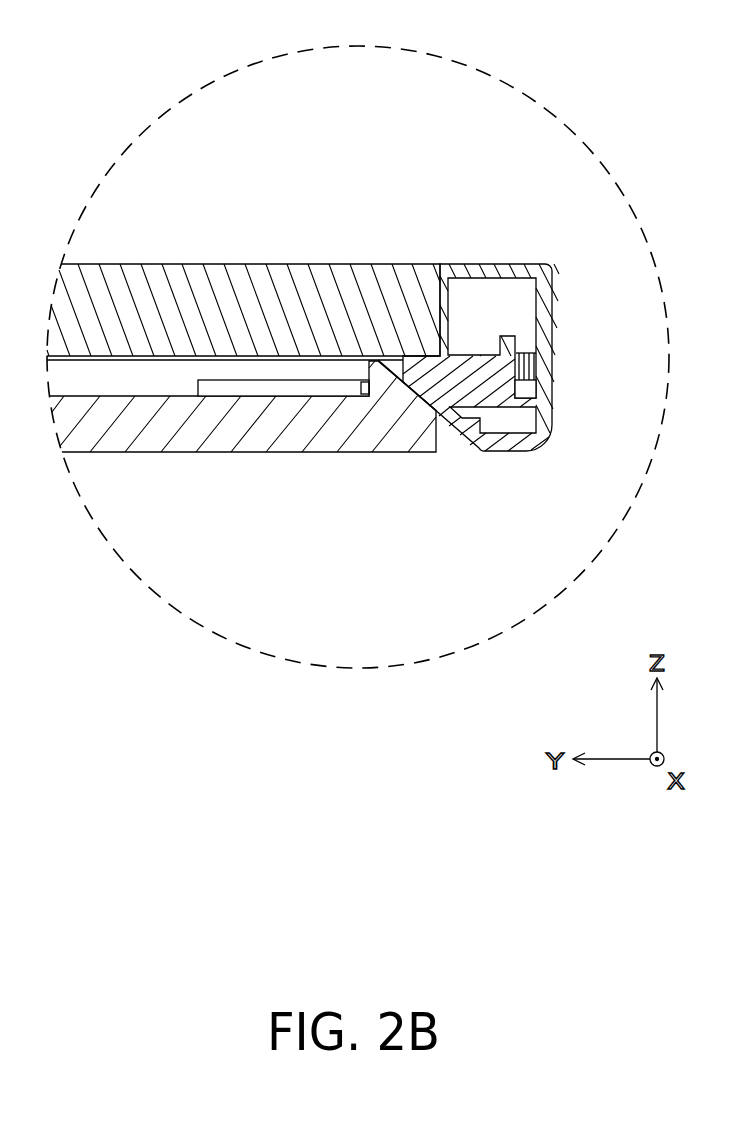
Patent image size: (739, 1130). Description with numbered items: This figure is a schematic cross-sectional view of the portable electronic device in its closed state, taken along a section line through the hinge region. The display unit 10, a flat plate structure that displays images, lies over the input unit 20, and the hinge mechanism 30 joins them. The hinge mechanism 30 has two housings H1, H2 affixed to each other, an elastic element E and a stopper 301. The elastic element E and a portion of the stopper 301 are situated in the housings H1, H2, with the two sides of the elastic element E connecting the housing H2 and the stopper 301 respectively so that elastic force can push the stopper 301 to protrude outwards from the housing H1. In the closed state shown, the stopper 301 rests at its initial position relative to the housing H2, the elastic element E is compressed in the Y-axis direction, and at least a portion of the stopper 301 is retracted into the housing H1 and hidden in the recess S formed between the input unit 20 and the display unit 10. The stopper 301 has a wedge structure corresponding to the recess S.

The display unit 10 is at (253, 270).
The input unit 20 is at (208, 452).
The hinge mechanism 30 is at (524, 359).
The stopper 301 is at (440, 394).
The housing H1 is at (495, 270).
The housing H2 is at (551, 409).
The elastic element E is at (538, 362).
The recess S is at (392, 364).